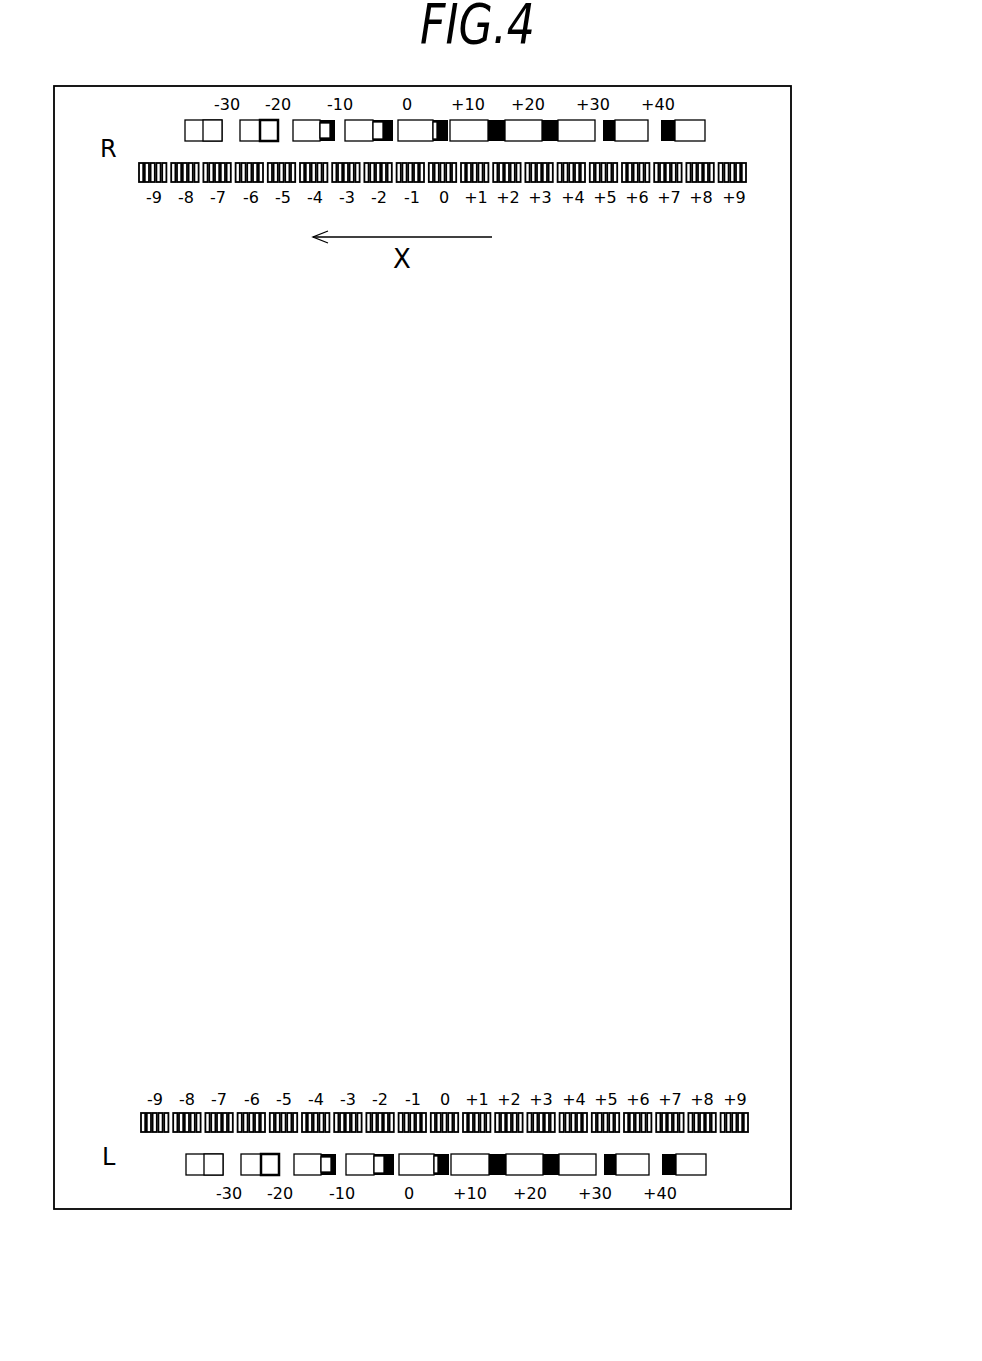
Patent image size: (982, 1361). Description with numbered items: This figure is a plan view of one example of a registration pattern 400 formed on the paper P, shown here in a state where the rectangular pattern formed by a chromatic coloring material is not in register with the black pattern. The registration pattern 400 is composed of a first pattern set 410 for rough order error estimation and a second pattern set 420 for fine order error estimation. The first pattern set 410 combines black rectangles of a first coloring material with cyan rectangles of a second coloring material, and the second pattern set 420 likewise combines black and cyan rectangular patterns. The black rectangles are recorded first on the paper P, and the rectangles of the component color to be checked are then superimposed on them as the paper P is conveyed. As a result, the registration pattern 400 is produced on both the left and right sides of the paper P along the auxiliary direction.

The registration pattern 400 is at (534, 649).
The first pattern set 410 is at (705, 131).
The second pattern set 420 is at (747, 168).
The paper P is at (791, 660).